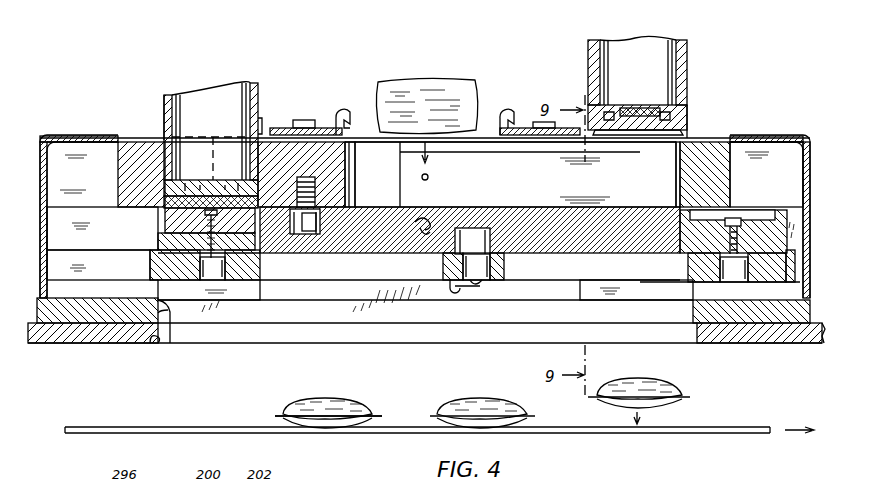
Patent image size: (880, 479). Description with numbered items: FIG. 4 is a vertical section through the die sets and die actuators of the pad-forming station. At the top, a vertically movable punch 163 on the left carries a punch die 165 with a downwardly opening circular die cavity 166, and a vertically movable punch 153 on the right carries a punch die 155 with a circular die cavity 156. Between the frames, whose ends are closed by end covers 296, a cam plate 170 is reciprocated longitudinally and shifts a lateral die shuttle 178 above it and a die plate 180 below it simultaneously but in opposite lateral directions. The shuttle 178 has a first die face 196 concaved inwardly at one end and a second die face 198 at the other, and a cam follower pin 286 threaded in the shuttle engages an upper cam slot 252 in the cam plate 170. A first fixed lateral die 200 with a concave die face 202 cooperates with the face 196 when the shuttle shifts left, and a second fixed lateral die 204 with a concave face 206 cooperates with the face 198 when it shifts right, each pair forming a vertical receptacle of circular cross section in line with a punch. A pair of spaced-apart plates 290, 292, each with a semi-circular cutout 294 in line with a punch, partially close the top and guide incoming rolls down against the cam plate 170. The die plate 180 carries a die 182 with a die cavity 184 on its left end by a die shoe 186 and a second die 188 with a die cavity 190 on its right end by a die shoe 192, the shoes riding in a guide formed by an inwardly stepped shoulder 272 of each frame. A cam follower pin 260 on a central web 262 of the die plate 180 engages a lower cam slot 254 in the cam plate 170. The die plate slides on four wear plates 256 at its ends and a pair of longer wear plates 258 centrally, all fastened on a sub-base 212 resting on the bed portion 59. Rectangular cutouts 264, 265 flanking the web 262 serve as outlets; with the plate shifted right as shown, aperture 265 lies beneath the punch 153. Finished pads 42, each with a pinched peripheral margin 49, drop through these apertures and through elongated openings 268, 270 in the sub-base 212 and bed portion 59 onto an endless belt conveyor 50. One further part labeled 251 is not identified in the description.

The end covers 296 is at (50, 135).
The first fixed lateral die 200 is at (124, 138).
The concave die face 202 is at (166, 142).
The punch 163 is at (182, 97).
The semi-circular cutout 294 is at (262, 118).
The lateral die shuttle 178 is at (275, 136).
The plate 290 is at (338, 112).
The plate 292 is at (520, 124).
The circular die cavity 156 is at (595, 110).
The punch 153 is at (588, 42).
The punch die 155 is at (690, 130).
The concave face 206 is at (690, 140).
The second fixed lateral die 204 is at (728, 138).
The circular die cavity 166 is at (170, 192).
The first die face 196 is at (275, 170).
The die cavity 184 is at (168, 208).
The punch die 165 is at (268, 205).
The die 182 is at (165, 215).
The die shoe 186 is at (160, 234).
The inwardly stepped shoulder 272 is at (66, 210).
The block 251 is at (90, 252).
The die plate 180 is at (152, 266).
The second die face 198 is at (405, 188).
The cam follower pin 260 is at (467, 230).
The lower cam slot 254 is at (490, 215).
The cam plate 170 is at (540, 208).
The die cavity 190 is at (755, 198).
The second die 188 is at (762, 225).
The die shoe 192 is at (765, 256).
The cam follower pin 286 is at (320, 225).
The upper cam slot 252 is at (312, 232).
The web 262 is at (496, 268).
The wear plates 256 is at (165, 297).
The rectangular cutout 264 is at (268, 284).
The rectangular cutout 265 is at (680, 282).
The longer wear plates 258 is at (278, 302).
The sub-base 212 is at (48, 332).
The bed portion 59 is at (90, 332).
The elongated opening 268 is at (182, 338).
The elongated opening 270 is at (160, 343).
The endless belt conveyor 50 is at (546, 432).
The finished pads 42 is at (330, 398).
The pinched peripheral margin 49 is at (282, 415).